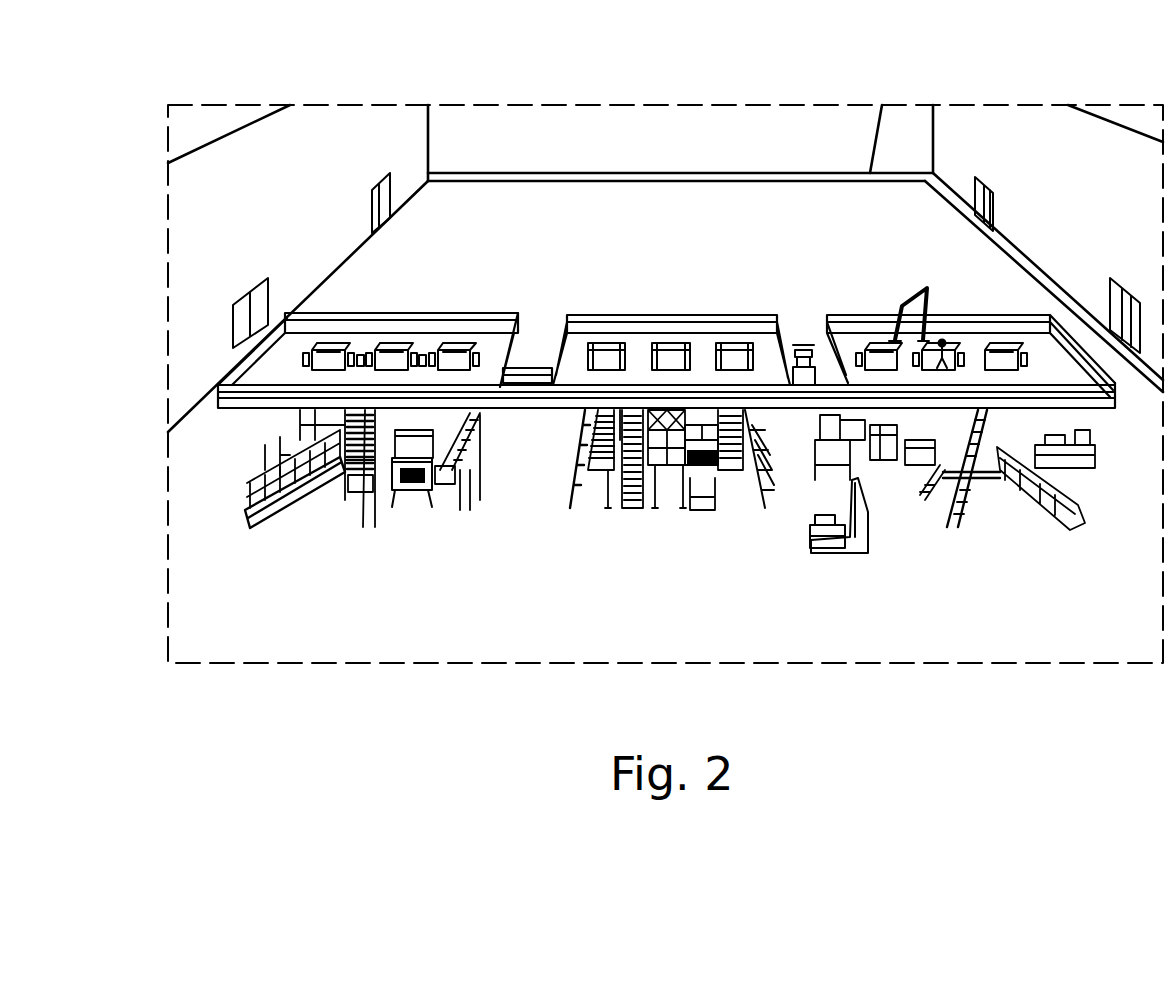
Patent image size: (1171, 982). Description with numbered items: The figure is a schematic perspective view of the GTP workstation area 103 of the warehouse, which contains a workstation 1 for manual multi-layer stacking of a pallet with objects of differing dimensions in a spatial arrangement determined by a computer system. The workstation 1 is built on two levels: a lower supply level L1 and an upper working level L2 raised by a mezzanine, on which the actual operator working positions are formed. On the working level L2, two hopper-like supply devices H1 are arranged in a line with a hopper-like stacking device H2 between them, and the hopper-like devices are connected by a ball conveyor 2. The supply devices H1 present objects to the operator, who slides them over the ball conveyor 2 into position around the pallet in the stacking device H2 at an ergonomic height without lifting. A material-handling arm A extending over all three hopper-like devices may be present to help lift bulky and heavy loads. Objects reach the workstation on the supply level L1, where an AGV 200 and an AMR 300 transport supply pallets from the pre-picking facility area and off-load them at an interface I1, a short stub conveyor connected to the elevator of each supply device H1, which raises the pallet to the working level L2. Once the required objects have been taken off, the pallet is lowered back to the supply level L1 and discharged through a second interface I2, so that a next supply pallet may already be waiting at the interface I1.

The GTP workstation area 103 is at (507, 131).
The workstation 1 is at (679, 312).
The material-handling arm A is at (925, 285).
The hopper like supply device H1 is at (335, 346).
The hopper like stacking device H2 is at (397, 343).
The ball conveyor 2 is at (365, 352).
The upper working level L2 is at (259, 358).
The lower supply level L1 is at (320, 553).
The interface I1 is at (438, 599).
The second interface I2 is at (447, 511).
The AGV 200 is at (885, 609).
The AMR 300 is at (843, 565).